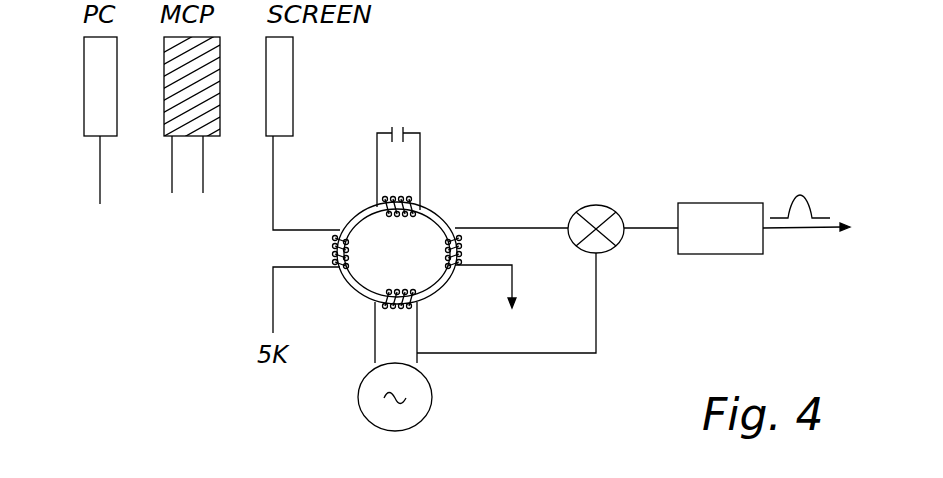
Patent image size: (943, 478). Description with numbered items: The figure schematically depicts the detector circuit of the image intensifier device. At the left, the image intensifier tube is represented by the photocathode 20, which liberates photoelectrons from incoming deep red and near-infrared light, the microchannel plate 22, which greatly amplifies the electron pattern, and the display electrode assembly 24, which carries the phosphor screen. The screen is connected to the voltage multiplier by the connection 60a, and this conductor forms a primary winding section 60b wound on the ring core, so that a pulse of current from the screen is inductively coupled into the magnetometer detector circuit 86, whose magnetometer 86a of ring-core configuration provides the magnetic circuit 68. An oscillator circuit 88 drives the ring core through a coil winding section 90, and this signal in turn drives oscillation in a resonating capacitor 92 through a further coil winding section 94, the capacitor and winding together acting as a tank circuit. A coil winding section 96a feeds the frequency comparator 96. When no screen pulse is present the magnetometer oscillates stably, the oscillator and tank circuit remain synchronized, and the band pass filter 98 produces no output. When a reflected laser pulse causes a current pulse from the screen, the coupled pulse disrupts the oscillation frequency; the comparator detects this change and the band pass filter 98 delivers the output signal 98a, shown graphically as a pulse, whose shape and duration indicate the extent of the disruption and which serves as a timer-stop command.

The photocathode 20 is at (86, 92).
The microchannel plate 22 is at (219, 110).
The display electrode assembly 24 is at (293, 72).
The connection 60a is at (273, 195).
The primary winding section 60b is at (327, 250).
The magnetic circuit 68 is at (358, 296).
The magnetometer detector circuit 86 is at (458, 193).
The magnetometer 86a is at (445, 222).
The oscillator circuit 88 is at (403, 422).
The coil winding section 90 is at (399, 308).
The resonating capacitor 92 is at (405, 128).
The coil winding section 94 is at (400, 200).
The frequency comparator 96 is at (612, 207).
The coil winding section 96a is at (457, 250).
The band pass filter 98 is at (728, 203).
The output signal 98a is at (803, 198).